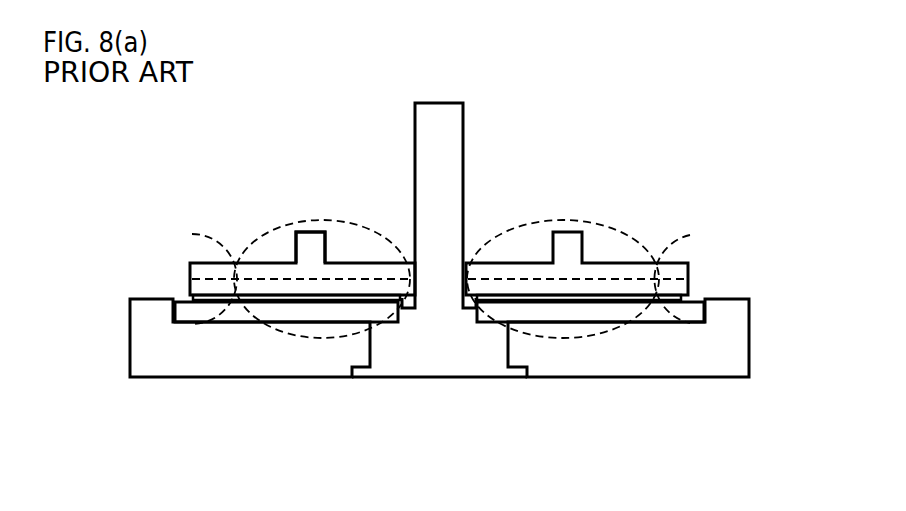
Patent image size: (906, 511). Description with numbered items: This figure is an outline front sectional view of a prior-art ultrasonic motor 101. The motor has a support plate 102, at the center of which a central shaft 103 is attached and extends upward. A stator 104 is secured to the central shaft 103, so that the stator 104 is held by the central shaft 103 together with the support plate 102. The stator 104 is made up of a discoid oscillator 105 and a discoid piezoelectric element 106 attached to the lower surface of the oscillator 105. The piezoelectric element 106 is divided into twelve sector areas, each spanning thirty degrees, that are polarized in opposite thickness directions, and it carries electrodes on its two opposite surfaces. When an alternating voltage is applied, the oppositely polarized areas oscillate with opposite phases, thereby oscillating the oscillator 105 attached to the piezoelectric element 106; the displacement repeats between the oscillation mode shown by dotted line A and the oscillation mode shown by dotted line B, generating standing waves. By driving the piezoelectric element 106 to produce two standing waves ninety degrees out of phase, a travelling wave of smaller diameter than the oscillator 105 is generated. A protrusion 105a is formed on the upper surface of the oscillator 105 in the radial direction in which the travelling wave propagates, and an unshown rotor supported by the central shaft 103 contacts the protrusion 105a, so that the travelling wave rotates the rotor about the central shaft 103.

The ultrasonic motor 101 is at (143, 201).
The support plate 102 is at (230, 377).
The central shaft 103 is at (463, 161).
The stator 104 is at (694, 255).
The oscillator 105 is at (190, 272).
The protrusion 105a is at (309, 231).
The piezoelectric element 106 is at (652, 300).
The oscillation mode indicated by dotted line A is at (282, 230).
The oscillation mode indicated by dotted line B is at (310, 338).